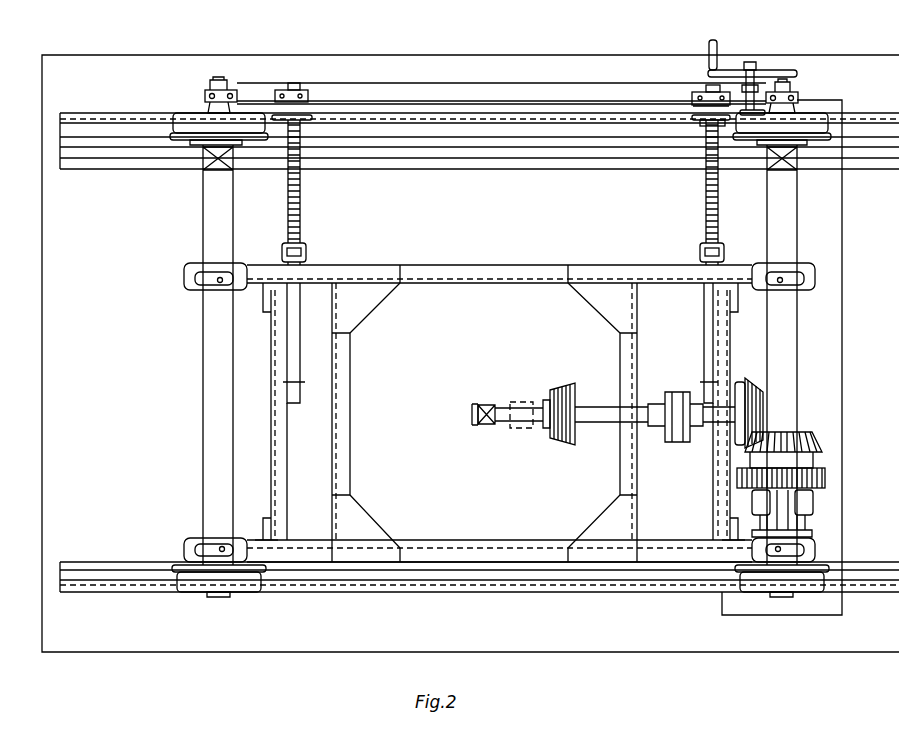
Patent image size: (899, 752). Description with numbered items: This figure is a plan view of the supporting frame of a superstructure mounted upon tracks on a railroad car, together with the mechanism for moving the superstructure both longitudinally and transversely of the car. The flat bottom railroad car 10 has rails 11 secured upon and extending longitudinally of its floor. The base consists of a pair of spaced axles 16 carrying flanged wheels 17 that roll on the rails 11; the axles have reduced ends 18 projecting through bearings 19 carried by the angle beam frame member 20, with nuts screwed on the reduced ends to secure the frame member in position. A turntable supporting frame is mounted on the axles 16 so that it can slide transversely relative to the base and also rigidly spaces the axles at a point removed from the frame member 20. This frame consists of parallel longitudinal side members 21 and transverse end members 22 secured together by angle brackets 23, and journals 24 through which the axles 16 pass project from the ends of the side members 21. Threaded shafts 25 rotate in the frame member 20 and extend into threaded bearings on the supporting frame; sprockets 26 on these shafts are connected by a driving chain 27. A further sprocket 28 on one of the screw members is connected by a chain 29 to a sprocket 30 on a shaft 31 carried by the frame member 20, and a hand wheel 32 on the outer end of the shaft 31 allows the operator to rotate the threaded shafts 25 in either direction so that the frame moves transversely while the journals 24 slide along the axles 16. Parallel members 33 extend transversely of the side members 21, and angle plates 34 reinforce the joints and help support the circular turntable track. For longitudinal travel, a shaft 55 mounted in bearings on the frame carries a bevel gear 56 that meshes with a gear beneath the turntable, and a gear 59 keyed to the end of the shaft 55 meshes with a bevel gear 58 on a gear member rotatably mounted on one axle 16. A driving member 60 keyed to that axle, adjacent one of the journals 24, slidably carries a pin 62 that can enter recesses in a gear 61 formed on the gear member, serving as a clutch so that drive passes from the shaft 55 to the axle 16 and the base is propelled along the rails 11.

The flat bottom railroad car 10 is at (470, 353).
The rails 11 is at (128, 150).
The axles 16 is at (205, 207).
The flanged wheels 17 is at (185, 140).
The reduced ends 18 is at (222, 80).
The bearings 19 is at (205, 95).
The angle beam frame member 20 is at (410, 88).
The longitudinal side members 21 is at (470, 277).
The transverse end members 22 is at (285, 438).
The angle brackets 23 is at (266, 295).
The journals 24 is at (222, 272).
The threaded shafts 25 is at (300, 200).
The sprockets 26 is at (305, 123).
The driving chain 27 is at (538, 118).
The sprocket 28 is at (692, 120).
The chain 29 is at (727, 122).
The sprocket 30 is at (757, 115).
The shaft 31 is at (752, 62).
The hand wheel 32 is at (728, 85).
The parallel members 33 is at (345, 390).
The angle plates 34 is at (483, 415).
The shaft 55 is at (602, 425).
The bevel gear 56 is at (562, 446).
The bevel gear 58 is at (820, 440).
The gear 59 is at (762, 398).
The driving member 60 is at (808, 505).
The gear 61 is at (825, 478).
The pin 62 is at (790, 522).